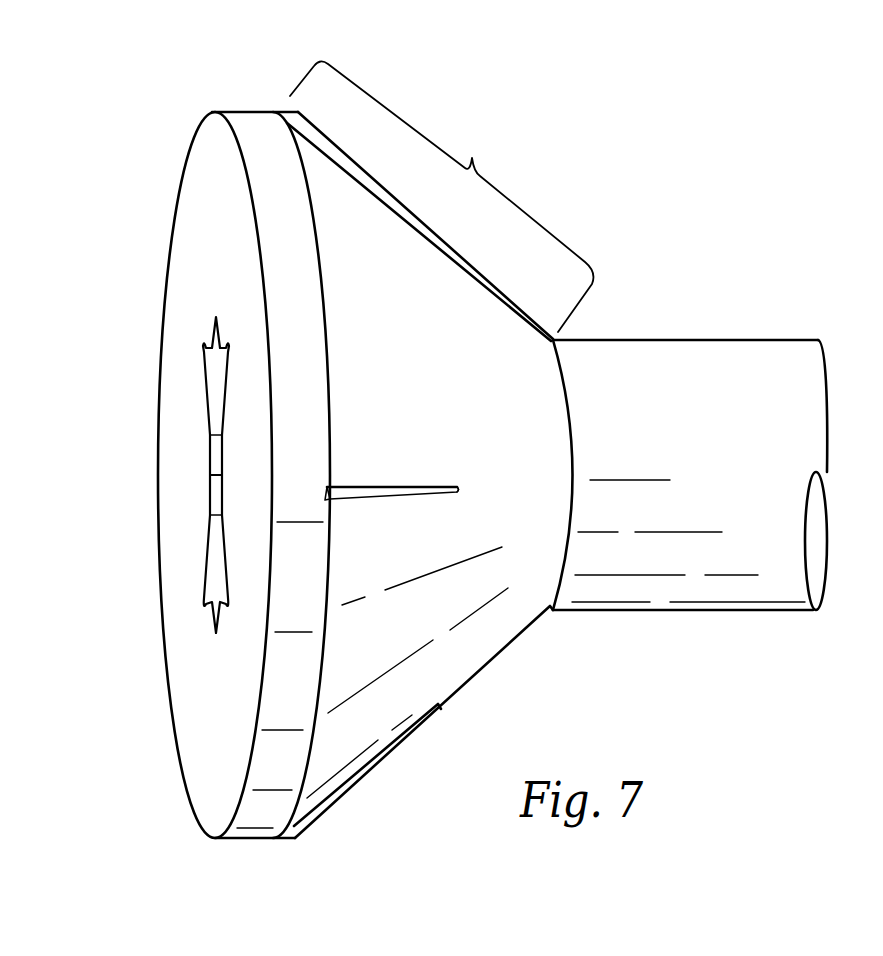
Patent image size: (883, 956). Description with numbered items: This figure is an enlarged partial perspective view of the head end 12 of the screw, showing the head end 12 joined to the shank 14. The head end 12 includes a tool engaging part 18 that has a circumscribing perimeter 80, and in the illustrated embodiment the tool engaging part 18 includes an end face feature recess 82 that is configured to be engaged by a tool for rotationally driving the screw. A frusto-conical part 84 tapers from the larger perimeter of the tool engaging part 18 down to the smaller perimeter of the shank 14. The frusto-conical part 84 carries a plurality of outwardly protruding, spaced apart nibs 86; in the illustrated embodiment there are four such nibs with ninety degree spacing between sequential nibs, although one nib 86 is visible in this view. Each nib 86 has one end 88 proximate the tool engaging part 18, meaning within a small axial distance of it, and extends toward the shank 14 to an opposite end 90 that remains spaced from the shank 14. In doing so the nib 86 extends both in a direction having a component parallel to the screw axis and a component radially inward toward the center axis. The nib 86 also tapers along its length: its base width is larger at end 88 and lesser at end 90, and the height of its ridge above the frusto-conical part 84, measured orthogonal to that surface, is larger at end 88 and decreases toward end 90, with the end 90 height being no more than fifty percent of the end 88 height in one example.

The head end 12 is at (587, 180).
The shank 14 is at (690, 365).
The tool engaging part 18 is at (200, 443).
The circumscribing perimeter 80 is at (250, 127).
The end face feature recess 82 is at (215, 566).
The frusto-conical part 84 is at (441, 196).
The nib 86 is at (383, 482).
The nib end proximate the tool engaging part 88 is at (328, 495).
The nib end spaced from the shank 90 is at (458, 488).